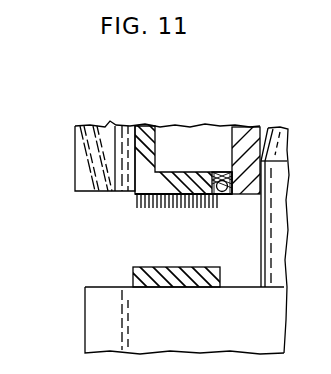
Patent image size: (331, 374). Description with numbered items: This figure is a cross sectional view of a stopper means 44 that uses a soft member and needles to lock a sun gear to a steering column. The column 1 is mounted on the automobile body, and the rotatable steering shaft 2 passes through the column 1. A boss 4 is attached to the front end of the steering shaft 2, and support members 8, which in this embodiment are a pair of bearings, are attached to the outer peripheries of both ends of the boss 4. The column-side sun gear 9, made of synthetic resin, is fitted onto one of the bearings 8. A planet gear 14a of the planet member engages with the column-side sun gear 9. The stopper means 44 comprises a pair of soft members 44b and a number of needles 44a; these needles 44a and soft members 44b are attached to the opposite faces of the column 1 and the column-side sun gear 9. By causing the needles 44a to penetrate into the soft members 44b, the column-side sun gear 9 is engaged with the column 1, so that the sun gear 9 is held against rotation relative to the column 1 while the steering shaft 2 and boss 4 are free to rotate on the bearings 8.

The column 1 is at (85, 300).
The steering shaft 2 is at (288, 172).
The boss 4 is at (252, 126).
The support member 8 is at (224, 173).
The column-side sun gear 9 is at (148, 152).
The planet gear 14a is at (73, 162).
The stopper means 44 is at (167, 247).
The needle 44a is at (220, 197).
The soft member 44b is at (212, 267).